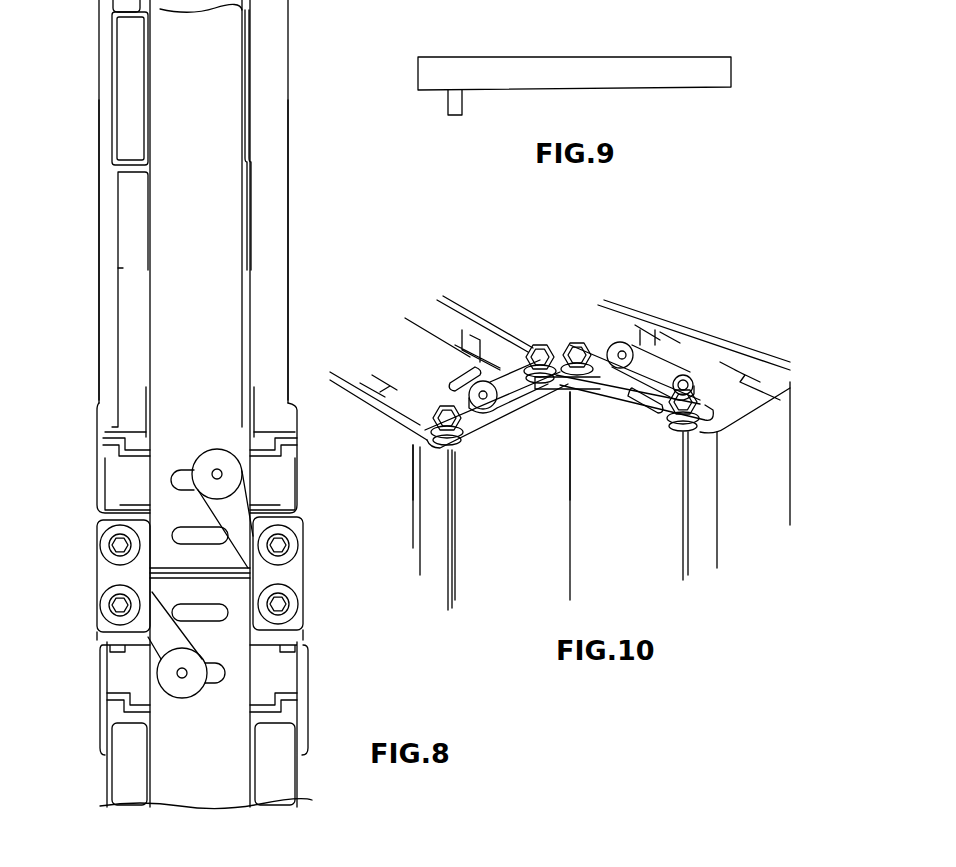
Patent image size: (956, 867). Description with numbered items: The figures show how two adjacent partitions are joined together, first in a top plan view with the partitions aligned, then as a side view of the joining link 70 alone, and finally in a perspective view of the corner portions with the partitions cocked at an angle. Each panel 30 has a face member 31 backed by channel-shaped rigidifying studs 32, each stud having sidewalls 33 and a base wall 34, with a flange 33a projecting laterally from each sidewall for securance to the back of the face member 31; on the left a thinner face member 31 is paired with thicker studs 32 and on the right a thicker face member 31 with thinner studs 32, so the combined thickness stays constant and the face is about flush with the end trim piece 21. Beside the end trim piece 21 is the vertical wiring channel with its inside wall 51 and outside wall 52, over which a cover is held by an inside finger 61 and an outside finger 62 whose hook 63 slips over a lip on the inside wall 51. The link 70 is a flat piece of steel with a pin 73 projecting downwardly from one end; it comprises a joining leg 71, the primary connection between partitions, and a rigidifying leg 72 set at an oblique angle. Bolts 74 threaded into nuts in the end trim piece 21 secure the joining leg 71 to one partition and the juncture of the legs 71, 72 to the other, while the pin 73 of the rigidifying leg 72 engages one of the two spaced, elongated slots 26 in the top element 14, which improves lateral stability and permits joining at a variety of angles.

In FIG. 8, the top element 14 is at (206, 321).
In FIG. 8, the end trim piece 21 is at (97, 525).
In FIG. 10, the end trim piece 21 is at (508, 548).
In FIG. 8, the slots 26 is at (182, 471).
In FIG. 8, the panel 30 is at (95, 153).
In FIG. 8, the face member 31 is at (101, 302).
In FIG. 8, the rigidifying studs 32 is at (238, 62).
In FIG. 8, the sidewalls 33 is at (136, 170).
In FIG. 8, the flange 33a is at (122, 228).
In FIG. 8, the base wall 34 is at (148, 70).
In FIG. 8, the inside wall 51 is at (143, 437).
In FIG. 8, the outside wall 52 is at (138, 505).
In FIG. 8, the inside finger 61 is at (108, 440).
In FIG. 8, the outside finger 62 is at (105, 458).
In FIG. 8, the hook 63 is at (131, 448).
In FIG. 8, the link 70 is at (92, 584).
In FIG. 9, the link 70 is at (614, 50).
In FIG. 10, the link 70 is at (571, 340).
In FIG. 8, the joining leg 71 is at (152, 571).
In FIG. 10, the joining leg 71 is at (560, 392).
In FIG. 8, the rigidifying leg 72 is at (236, 502).
In FIG. 10, the rigidifying leg 72 is at (525, 400).
In FIG. 9, the pin 73 is at (463, 110).
In FIG. 8, the bolts 74 is at (284, 545).
In FIG. 10, the bolts 74 is at (540, 345).